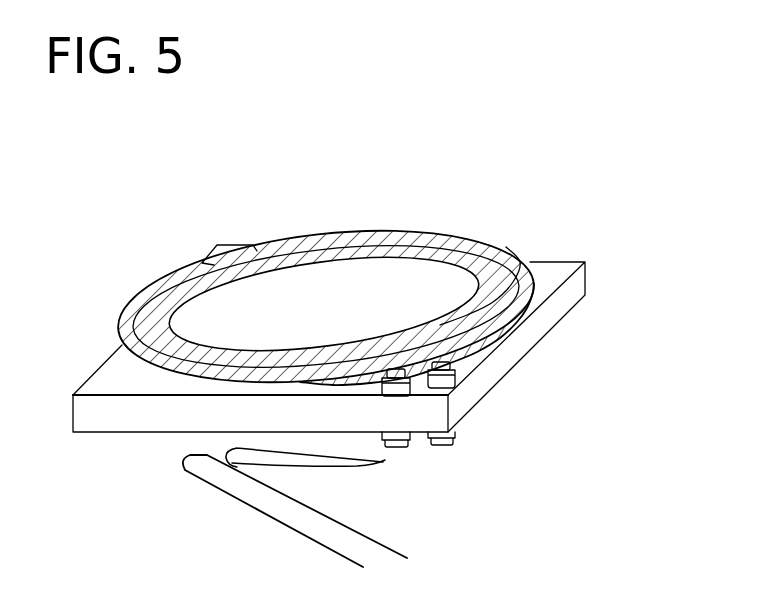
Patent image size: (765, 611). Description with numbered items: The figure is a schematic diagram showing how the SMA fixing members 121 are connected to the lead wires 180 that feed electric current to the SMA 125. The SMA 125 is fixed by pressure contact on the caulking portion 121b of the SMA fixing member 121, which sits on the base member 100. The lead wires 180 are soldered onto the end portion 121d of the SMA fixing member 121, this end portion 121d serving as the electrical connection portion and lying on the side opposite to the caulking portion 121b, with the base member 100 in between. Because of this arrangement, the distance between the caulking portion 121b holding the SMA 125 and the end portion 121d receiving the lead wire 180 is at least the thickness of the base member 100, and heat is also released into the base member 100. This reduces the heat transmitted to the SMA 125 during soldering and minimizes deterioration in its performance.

The base member 100 is at (557, 270).
The SMA 125 is at (410, 378).
The SMA fixing member 121 is at (542, 426).
The caulking portion 121b is at (403, 378).
The end portion 121d is at (397, 445).
The lead wire 180 is at (327, 545).